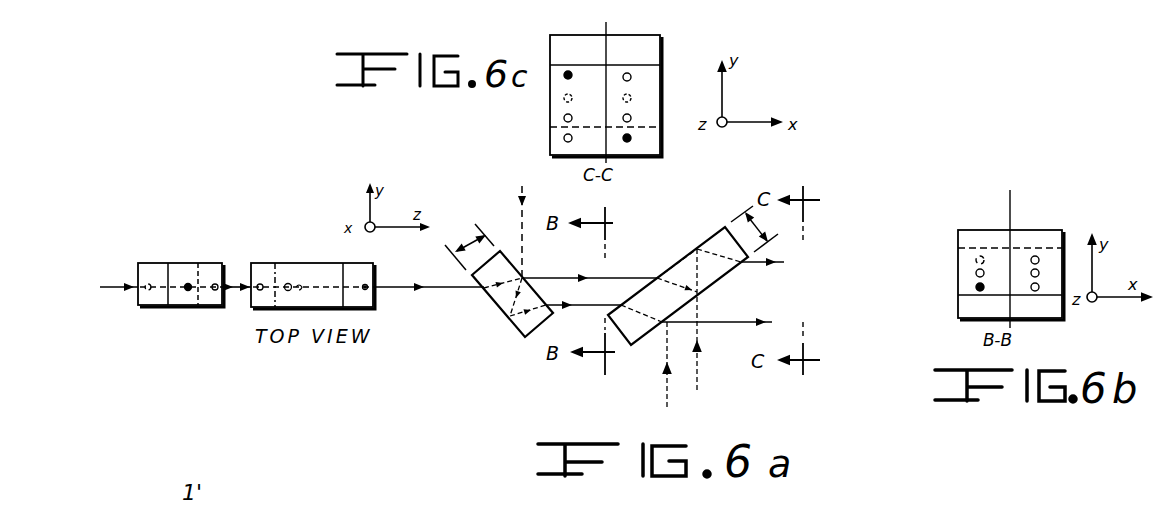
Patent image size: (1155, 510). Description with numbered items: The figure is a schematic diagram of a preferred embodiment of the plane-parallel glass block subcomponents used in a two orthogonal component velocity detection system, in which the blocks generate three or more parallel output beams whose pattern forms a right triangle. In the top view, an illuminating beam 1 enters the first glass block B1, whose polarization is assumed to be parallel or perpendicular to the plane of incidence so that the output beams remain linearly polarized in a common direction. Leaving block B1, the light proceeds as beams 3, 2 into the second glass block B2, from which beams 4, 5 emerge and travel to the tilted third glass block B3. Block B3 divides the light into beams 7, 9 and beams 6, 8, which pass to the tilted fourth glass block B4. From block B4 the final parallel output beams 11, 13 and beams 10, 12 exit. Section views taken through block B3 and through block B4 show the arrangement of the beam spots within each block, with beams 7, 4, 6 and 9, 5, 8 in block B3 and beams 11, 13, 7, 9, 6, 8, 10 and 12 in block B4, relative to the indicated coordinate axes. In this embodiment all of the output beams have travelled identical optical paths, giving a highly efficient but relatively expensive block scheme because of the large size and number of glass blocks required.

In FIG. 6A, the glass block B1 is at (160, 306).
In FIG. 6A, the glass block B2 is at (300, 263).
In FIG. 6A, the glass block B3 is at (512, 328).
In FIG. 6B, the glass block B3 is at (1040, 230).
In FIG. 6A, the glass block B4 is at (674, 262).
In FIG. 6C, the glass block B4 is at (550, 95).
In FIG. 6A, the input light beam 1 is at (119, 276).
In FIG. 6A, the light beam 2 from block B1 2 is at (236, 267).
In FIG. 6A, the light beam 3 from block B1 3 is at (236, 267).
In FIG. 6A, the light beam 4 from block B2 4 is at (453, 229).
In FIG. 6B, the light beam 4 from block B2 4 is at (988, 274).
In FIG. 6A, the light beam 5 from block B2 5 is at (453, 229).
In FIG. 6B, the light beam 5 from block B2 5 is at (1043, 274).
In FIG. 6A, the light beam 6 from block B3 6 is at (583, 297).
In FIG. 6C, the light beam 6 from block B3 6 is at (578, 119).
In FIG. 6B, the light beam 6 from block B3 6 is at (988, 288).
In FIG. 6A, the light beam 7 from block B3 7 is at (589, 270).
In FIG. 6C, the light beam 7 from block B3 7 is at (578, 99).
In FIG. 6B, the light beam 7 from block B3 7 is at (988, 260).
In FIG. 6A, the light beam 8 from block B3 8 is at (583, 297).
In FIG. 6C, the light beam 8 from block B3 8 is at (634, 119).
In FIG. 6B, the light beam 8 from block B3 8 is at (1043, 288).
In FIG. 6A, the light beam 9 from block B3 9 is at (589, 270).
In FIG. 6C, the light beam 9 from block B3 9 is at (634, 99).
In FIG. 6B, the light beam 9 from block B3 9 is at (1043, 260).
In FIG. 6A, the output light beam 10 from block B4 10 is at (741, 319).
In FIG. 6C, the output light beam 10 from block B4 10 is at (580, 139).
In FIG. 6A, the output light beam 11 from block B4 11 is at (786, 262).
In FIG. 6C, the output light beam 11 from block B4 11 is at (579, 76).
In FIG. 6A, the output light beam 12 from block B4 12 is at (741, 319).
In FIG. 6C, the output light beam 12 from block B4 12 is at (638, 139).
In FIG. 6A, the output light beam 13 from block B4 13 is at (786, 262).
In FIG. 6C, the output light beam 13 from block B4 13 is at (638, 78).